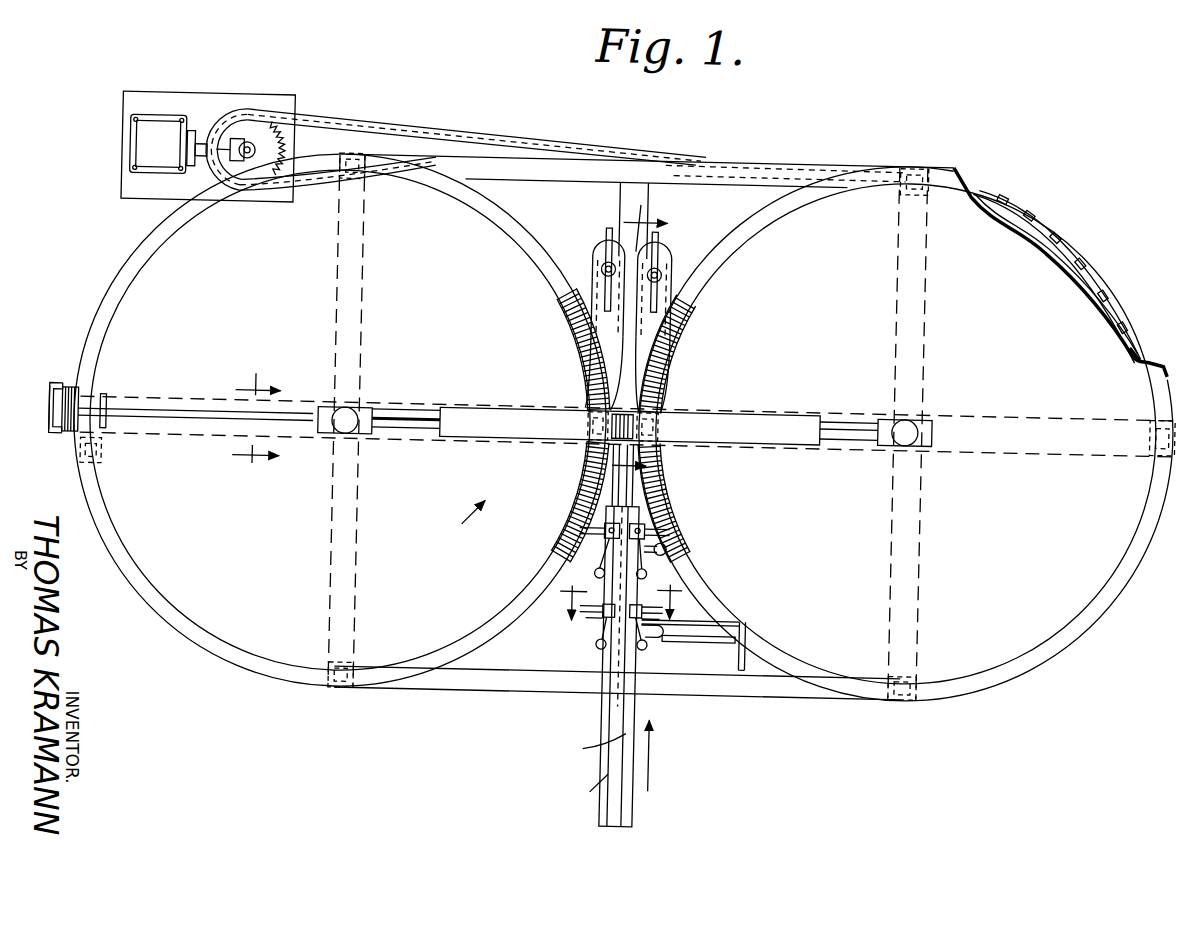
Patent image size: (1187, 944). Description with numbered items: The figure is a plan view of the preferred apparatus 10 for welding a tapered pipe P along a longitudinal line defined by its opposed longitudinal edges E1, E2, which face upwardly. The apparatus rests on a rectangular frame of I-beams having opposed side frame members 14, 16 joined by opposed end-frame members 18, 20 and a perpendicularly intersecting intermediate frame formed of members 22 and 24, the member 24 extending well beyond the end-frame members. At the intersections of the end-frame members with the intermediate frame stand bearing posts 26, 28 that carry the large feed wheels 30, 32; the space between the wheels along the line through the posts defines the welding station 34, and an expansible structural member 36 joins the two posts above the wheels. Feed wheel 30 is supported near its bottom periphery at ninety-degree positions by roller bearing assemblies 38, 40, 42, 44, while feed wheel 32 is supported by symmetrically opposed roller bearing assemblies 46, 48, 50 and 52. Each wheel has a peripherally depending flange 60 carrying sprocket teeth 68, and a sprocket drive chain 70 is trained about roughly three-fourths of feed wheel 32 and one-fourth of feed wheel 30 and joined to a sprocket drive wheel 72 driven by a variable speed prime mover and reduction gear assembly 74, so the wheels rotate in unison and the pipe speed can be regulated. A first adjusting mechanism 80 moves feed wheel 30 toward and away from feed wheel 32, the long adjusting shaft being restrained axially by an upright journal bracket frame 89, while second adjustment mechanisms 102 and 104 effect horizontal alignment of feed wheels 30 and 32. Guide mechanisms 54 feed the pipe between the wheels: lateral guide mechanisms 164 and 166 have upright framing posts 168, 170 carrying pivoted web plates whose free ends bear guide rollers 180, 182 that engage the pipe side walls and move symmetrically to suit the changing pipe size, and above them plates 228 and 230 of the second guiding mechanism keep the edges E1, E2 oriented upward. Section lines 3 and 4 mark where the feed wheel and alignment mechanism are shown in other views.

The section line 3- 3 is at (255, 424).
The section line 4- 4 is at (646, 347).
The apparatus 10 is at (957, 724).
The side frame member 14 is at (785, 152).
The side frame member 16 is at (762, 680).
The end-frame member 18 is at (924, 570).
The end-frame member 20 is at (323, 437).
The intermediate-frame member 22 is at (643, 187).
The intermediate-frame member 24 is at (1011, 403).
The bearing post 26 is at (349, 415).
The bearing post 28 is at (908, 417).
The feed wheel 30 is at (131, 332).
The feed wheel 32 is at (1082, 285).
The welding station 34 is at (673, 447).
The expansible structural member 36 is at (806, 406).
The roller bearing assembly 38 is at (80, 459).
The roller bearing assembly 40 is at (343, 178).
The roller bearing assembly 42 is at (579, 442).
The roller bearing assembly 44 is at (346, 689).
The roller bearing assembly 46 is at (673, 402).
The roller bearing assembly 48 is at (930, 162).
The roller bearing assembly 50 is at (1144, 402).
The roller bearing assembly 52 is at (917, 687).
The guide mechanisms 54 is at (589, 643).
The flange 60 is at (1040, 216).
The sprocket teeth 68 is at (1018, 212).
The sprocket drive chain 70 is at (466, 134).
The sprocket drive wheel 72 is at (276, 132).
The prime mover and reduction gear assembly 74 is at (256, 106).
The mechanism 80 is at (68, 392).
The journal bracket frame 89 is at (55, 439).
The mechanism 102 is at (585, 242).
The mechanism 104 is at (686, 264).
The guide mechanism 164 is at (563, 582).
The guide mechanism 166 is at (600, 530).
The framing post 168 is at (602, 642).
The framing post 170 is at (645, 641).
The guide roller 180 is at (602, 538).
The guide roller 182 is at (657, 531).
The plate 228 is at (612, 577).
The plate 230 is at (630, 585).
The longitudinal edge E1 is at (582, 753).
The longitudinal edge E2 is at (627, 753).
The tapered pipe P is at (585, 792).